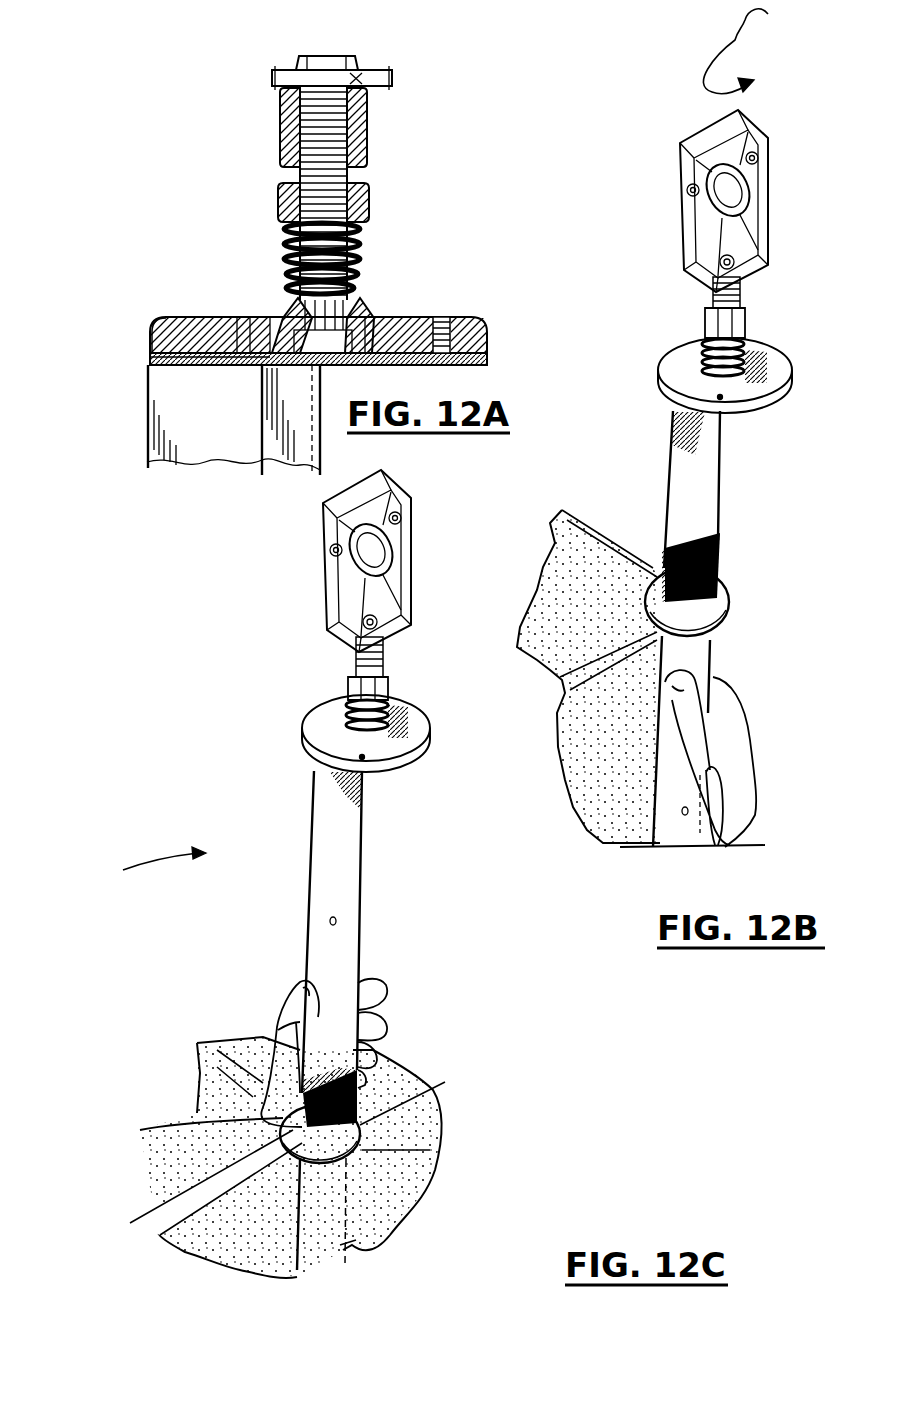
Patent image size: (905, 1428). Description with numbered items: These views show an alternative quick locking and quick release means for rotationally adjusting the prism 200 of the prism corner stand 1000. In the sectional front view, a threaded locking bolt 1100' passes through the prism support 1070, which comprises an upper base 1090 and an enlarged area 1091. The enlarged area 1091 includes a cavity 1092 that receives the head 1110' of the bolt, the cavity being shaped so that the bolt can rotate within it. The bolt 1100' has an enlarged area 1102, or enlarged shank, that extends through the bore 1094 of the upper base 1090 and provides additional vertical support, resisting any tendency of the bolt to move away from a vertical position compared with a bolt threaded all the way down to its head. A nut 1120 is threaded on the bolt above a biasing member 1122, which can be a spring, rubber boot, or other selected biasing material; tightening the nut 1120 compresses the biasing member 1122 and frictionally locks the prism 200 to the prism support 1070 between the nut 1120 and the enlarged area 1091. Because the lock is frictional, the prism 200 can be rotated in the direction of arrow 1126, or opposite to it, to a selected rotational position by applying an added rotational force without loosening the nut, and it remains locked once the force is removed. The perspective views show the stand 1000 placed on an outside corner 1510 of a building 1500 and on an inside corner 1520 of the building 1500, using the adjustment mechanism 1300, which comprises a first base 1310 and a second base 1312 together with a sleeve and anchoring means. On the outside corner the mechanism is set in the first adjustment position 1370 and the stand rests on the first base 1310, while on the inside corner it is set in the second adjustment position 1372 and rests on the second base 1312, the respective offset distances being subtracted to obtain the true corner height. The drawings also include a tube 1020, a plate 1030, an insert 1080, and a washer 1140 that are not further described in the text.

In FIG. 12A, the prism 200 is at (368, 80).
In FIG. 12B, the prism 200 is at (760, 133).
In FIG. 12C, the prism 200 is at (337, 557).
In FIG. 12C, the prism corner stand 1000 is at (136, 871).
In FIG. 12A, the tube 1020 is at (147, 437).
In FIG. 12B, the tube 1020 is at (707, 494).
In FIG. 12C, the tube 1020 is at (346, 843).
In FIG. 12A, the base plate 1030 is at (147, 363).
In FIG. 12A, the prism support 1070 is at (480, 327).
In FIG. 12B, the prism support 1070 is at (770, 363).
In FIG. 12C, the prism support 1070 is at (317, 734).
In FIG. 12A, the threaded insert 1080 is at (477, 363).
In FIG. 12A, the upper base 1090 is at (183, 318).
In FIG. 12A, the enlarged area 1091 is at (247, 317).
In FIG. 12B, the enlarged area 1091 is at (757, 353).
In FIG. 12C, the enlarged area 1091 is at (399, 727).
In FIG. 12A, the cavity 1092 is at (237, 317).
In FIG. 12A, the bore 1094 is at (270, 303).
In FIG. 12A, the threaded locking bolt 1100' is at (394, 135).
In FIG. 12A, the enlarged area 1102 is at (268, 432).
In FIG. 12A, the head 1110' is at (371, 303).
In FIG. 12A, the nut 1120 is at (278, 196).
In FIG. 12C, the nut 1120 is at (383, 670).
In FIG. 12A, the biasing member 1122 is at (362, 263).
In FIG. 12B, the biasing member 1122 is at (700, 345).
In FIG. 12C, the biasing member 1122 is at (337, 695).
In FIG. 12B, the arrow 1126 is at (774, 51).
In FIG. 12A, the washer 1140 is at (374, 302).
In FIG. 12B, the adjustment mechanism 1300 is at (724, 544).
In FIG. 12C, the adjustment mechanism 1300 is at (353, 1107).
In FIG. 12B, the first base 1310 is at (597, 563).
In FIG. 12C, the second base 1312 is at (387, 1140).
In FIG. 12B, the first adjustment position 1370 is at (722, 579).
In FIG. 12C, the first adjustment position 1370 is at (337, 919).
In FIG. 12B, the second adjustment position 1372 is at (685, 815).
In FIG. 12C, the second adjustment position 1372 is at (357, 1117).
In FIG. 12B, the building 1500 is at (567, 543).
In FIG. 12C, the building 1500 is at (400, 1190).
In FIG. 12B, the outside corner 1510 is at (725, 841).
In FIG. 12C, the outside corner 1510 is at (347, 1240).
In FIG. 12C, the inside corner 1520 is at (307, 1272).